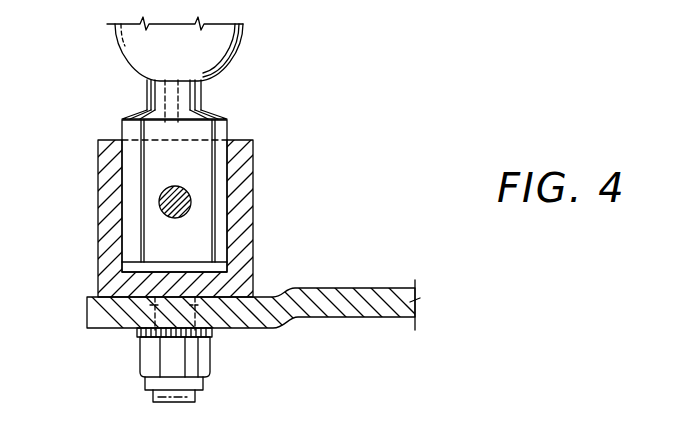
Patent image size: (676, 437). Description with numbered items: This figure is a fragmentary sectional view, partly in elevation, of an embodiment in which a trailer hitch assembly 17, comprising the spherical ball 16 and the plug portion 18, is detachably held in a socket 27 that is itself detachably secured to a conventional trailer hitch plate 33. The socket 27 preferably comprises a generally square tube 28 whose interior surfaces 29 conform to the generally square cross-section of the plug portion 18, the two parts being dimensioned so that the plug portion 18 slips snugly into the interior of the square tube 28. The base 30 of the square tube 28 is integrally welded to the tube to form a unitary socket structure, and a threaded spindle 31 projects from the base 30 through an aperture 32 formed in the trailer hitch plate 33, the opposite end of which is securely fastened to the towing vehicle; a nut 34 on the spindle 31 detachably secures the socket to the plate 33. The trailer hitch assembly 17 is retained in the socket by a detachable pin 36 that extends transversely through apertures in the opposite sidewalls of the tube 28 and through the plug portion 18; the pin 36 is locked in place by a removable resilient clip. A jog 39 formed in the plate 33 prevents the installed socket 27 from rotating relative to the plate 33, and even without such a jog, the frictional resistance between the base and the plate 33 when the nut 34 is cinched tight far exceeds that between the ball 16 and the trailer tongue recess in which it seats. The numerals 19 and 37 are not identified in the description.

The spherical ball 16 is at (132, 43).
The trailer hitch assembly 17 is at (134, 95).
The plug portion 18 is at (220, 153).
The neck 19 is at (194, 98).
The socket 27 is at (265, 182).
The square tube 28 is at (244, 228).
The interior surfaces 29 is at (128, 217).
The base 30 is at (255, 282).
The threaded spindle 31 is at (186, 297).
The aperture 32 is at (148, 300).
The trailer hitch plate 33 is at (355, 318).
The nut 34 is at (212, 365).
The detachable pin 36 is at (175, 188).
The pin 37 is at (188, 213).
The jog 39 is at (283, 328).